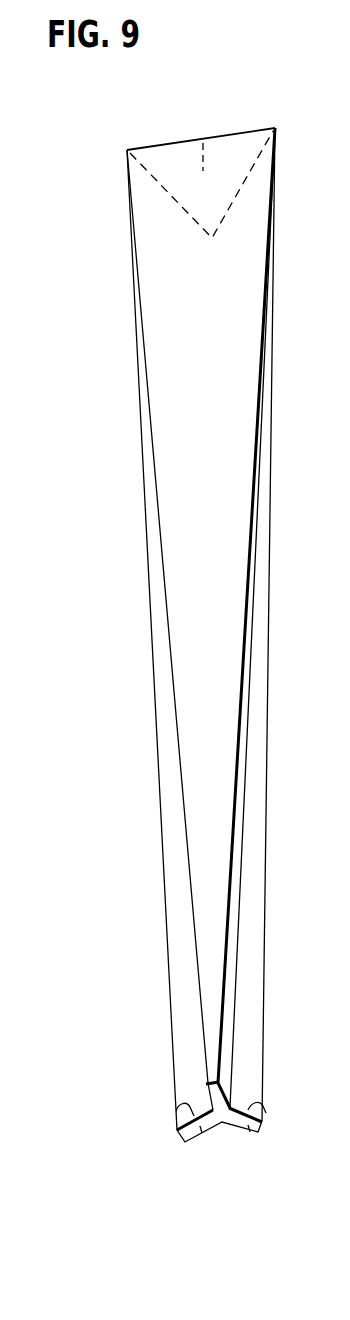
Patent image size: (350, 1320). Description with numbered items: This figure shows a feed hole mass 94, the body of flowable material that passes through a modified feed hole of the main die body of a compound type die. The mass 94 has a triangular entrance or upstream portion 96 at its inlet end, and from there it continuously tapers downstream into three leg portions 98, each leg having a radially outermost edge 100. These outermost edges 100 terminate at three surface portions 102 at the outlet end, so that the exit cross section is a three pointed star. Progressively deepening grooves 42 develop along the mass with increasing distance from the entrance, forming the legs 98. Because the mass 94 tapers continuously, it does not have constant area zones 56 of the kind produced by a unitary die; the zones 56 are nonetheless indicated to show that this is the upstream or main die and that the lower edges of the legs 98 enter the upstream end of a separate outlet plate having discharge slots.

The progressively deepening groove 42 is at (235, 1000).
The zone of commencement of honeycomb wall 56 is at (176, 1110).
The feed hole mass 94 is at (246, 124).
The triangular entrance portion 96 is at (202, 141).
The leg portion 98 is at (175, 1053).
The radially outermost edge 100 is at (218, 695).
The surface portion 102 is at (201, 1130).